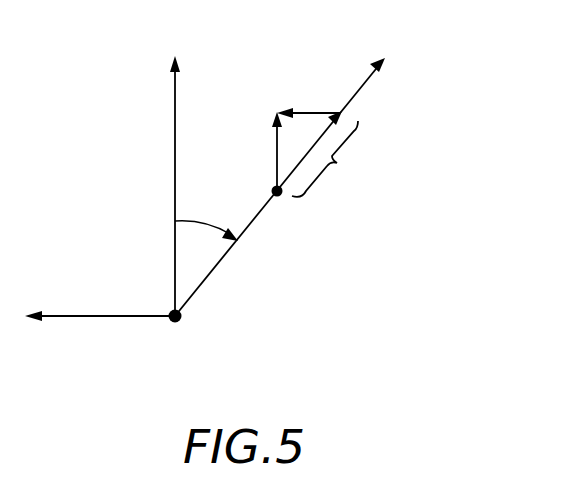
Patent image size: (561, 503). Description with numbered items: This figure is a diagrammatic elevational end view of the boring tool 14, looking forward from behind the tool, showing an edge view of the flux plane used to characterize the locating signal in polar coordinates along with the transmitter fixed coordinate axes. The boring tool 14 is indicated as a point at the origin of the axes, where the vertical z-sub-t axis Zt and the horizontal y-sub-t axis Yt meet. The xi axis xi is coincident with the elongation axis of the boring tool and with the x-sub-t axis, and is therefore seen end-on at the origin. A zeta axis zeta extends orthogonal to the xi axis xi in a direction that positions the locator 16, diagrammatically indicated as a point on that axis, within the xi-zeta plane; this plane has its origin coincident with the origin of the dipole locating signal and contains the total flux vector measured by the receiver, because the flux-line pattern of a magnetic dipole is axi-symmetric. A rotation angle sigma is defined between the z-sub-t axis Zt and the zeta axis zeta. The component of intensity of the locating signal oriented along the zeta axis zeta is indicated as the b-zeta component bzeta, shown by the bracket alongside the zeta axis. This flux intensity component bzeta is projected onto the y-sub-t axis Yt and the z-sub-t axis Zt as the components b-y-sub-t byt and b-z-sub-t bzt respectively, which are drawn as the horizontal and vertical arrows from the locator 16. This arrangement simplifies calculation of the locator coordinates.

The boring tool 14 is at (181, 314).
The locator 16 is at (279, 197).
The z_t axis Zt is at (159, 186).
The y_t axis Yt is at (96, 337).
The ζ axis zeta is at (290, 180).
The b_zt component bzt is at (277, 156).
The b_yt component byt is at (310, 112).
The rotation angle σ sigma is at (206, 240).
The b_ζ flux intensity component bzeta is at (334, 161).
The ξ axis xi is at (178, 322).